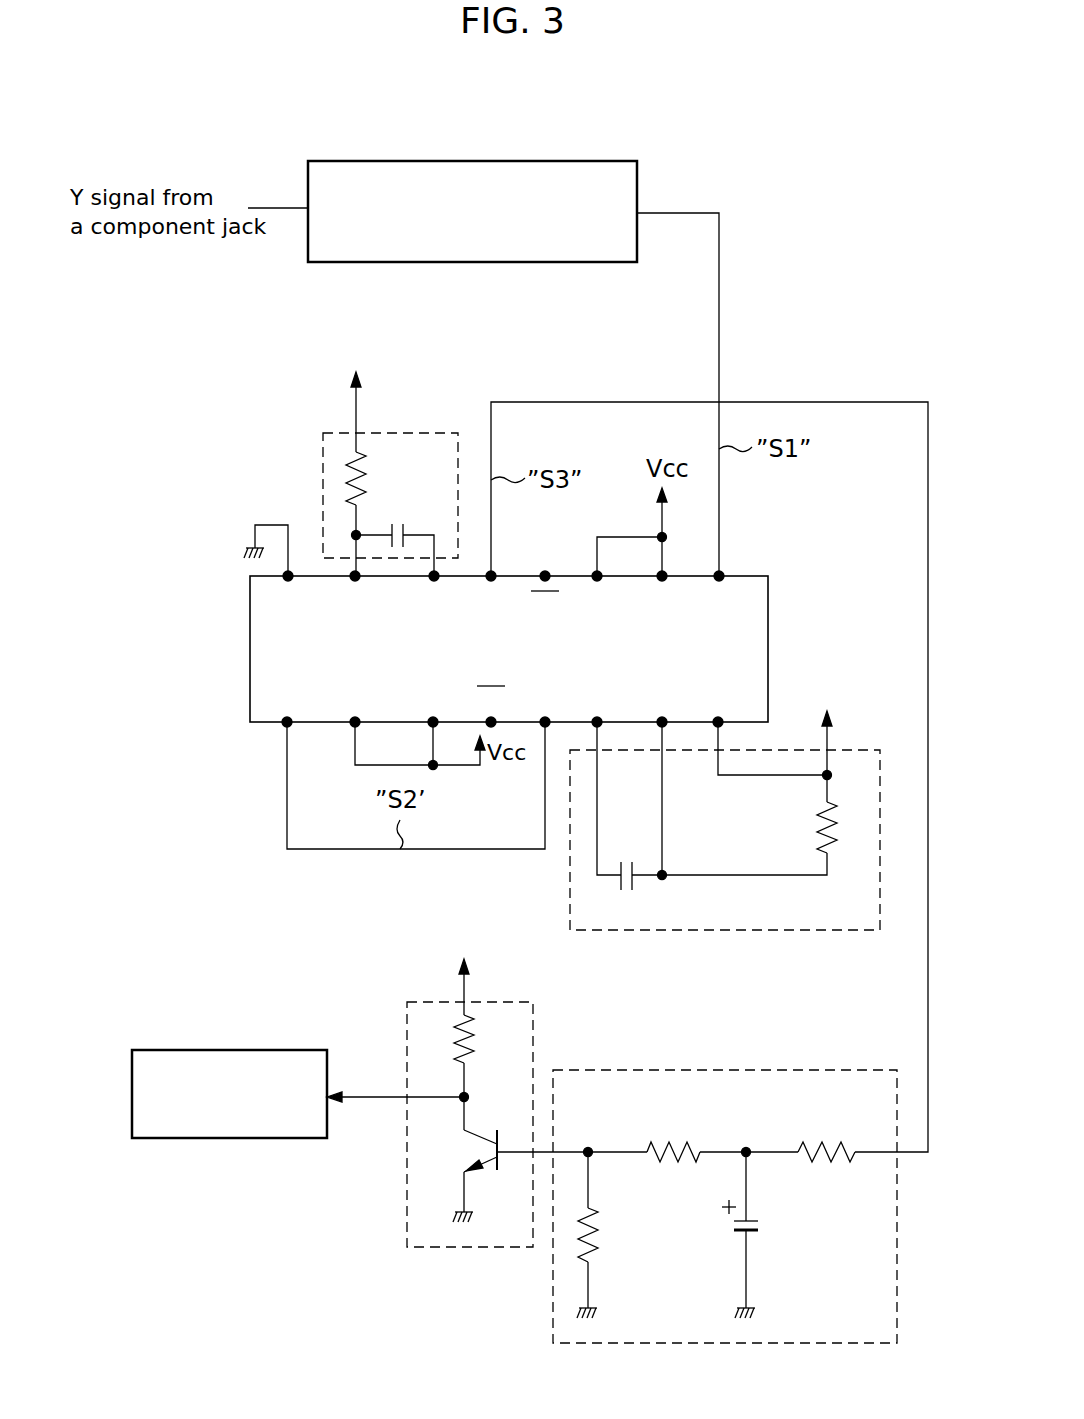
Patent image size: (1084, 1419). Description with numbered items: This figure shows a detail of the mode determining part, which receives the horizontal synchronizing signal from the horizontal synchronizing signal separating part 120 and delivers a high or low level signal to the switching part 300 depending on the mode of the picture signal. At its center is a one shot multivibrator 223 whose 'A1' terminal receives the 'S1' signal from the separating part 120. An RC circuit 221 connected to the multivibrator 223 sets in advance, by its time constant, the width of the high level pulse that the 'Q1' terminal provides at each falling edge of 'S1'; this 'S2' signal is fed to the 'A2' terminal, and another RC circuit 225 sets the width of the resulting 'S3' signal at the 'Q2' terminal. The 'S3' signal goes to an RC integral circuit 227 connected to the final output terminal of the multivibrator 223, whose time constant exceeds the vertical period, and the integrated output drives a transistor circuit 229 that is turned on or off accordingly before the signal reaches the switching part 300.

The horizontal synchronizing signal separating part 120 is at (388, 150).
The one shot multivibrator 223 is at (755, 636).
The RC circuit 225 is at (312, 462).
The RC circuit 221 is at (786, 945).
The transistor circuit 229 is at (395, 1201).
The RC integral circuit 227 is at (540, 1297).
The switching part 300 is at (228, 1058).